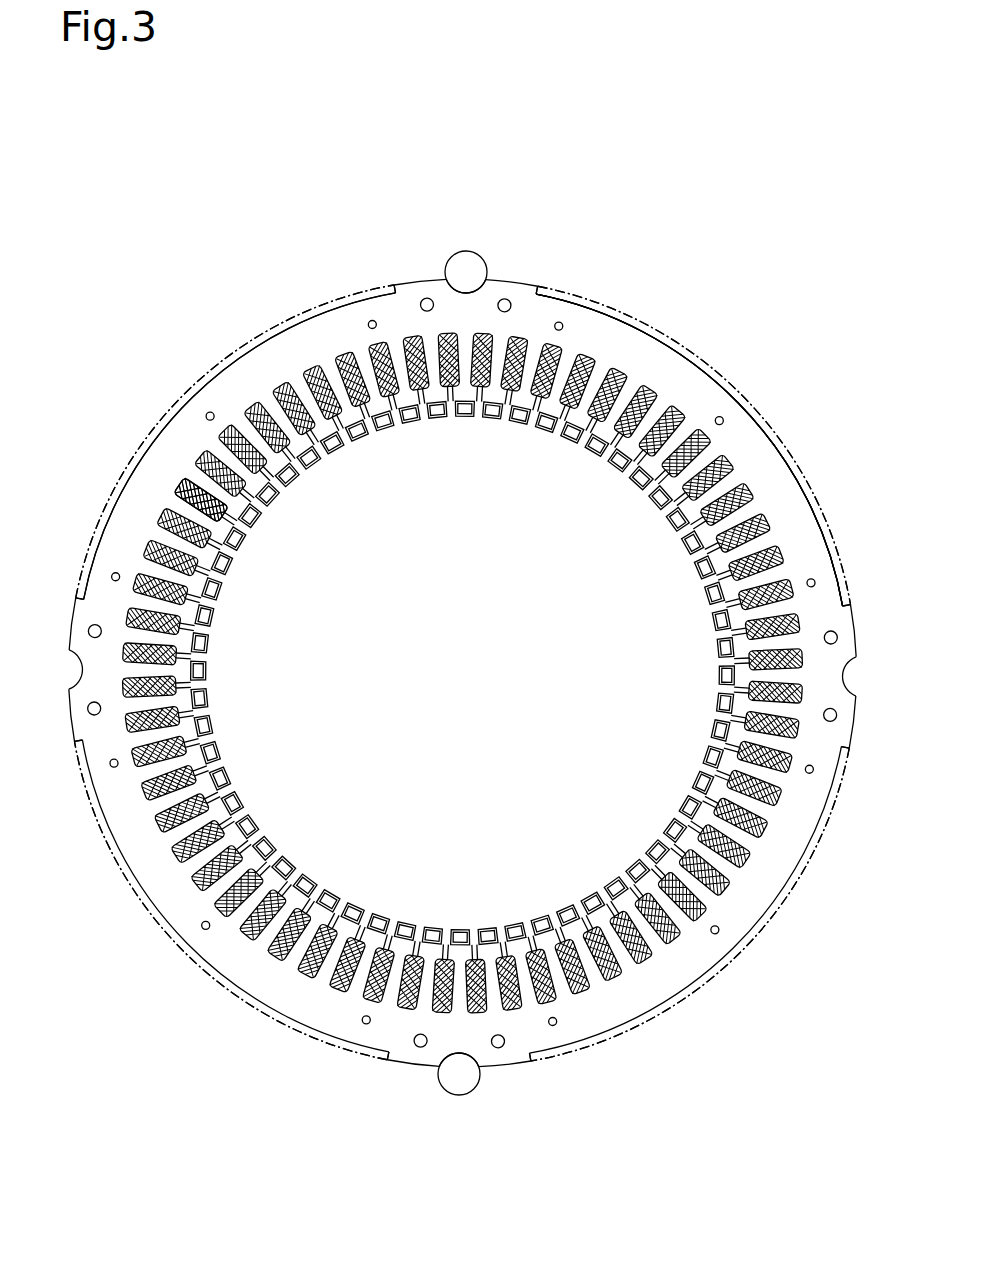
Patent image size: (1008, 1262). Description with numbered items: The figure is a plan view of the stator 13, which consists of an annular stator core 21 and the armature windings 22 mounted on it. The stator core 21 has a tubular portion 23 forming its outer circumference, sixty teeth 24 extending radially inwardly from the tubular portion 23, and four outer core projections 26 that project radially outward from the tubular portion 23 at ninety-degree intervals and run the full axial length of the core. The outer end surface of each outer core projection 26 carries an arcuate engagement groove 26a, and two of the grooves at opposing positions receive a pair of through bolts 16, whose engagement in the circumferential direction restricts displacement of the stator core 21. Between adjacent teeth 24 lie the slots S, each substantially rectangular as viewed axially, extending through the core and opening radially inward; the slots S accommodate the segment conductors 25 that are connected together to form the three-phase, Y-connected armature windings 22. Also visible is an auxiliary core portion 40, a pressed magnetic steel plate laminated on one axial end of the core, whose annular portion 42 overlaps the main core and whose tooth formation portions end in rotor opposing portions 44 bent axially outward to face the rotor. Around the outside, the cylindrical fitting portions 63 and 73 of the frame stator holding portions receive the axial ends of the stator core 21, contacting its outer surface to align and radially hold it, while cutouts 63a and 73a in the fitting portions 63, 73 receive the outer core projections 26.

The stator 13 is at (791, 293).
The through bolt 16 is at (465, 251).
The stator core 21 is at (180, 945).
The armature windings 22 is at (200, 499).
The tubular portion 23 is at (268, 355).
The teeth 24 is at (250, 466).
The segment conductors 25 is at (170, 487).
The outer core projections 26 is at (433, 278).
The engagement groove 26a is at (505, 253).
The auxiliary core portion 40 is at (745, 425).
The annular portion 42 is at (762, 458).
The rotor opposing portion 44 is at (307, 476).
The fitting portion 63 is at (735, 383).
The fitting portion 73 is at (463, 673).
The cutout 63a is at (390, 1070).
The cutout 73a is at (463, 673).
The slot S is at (193, 457).